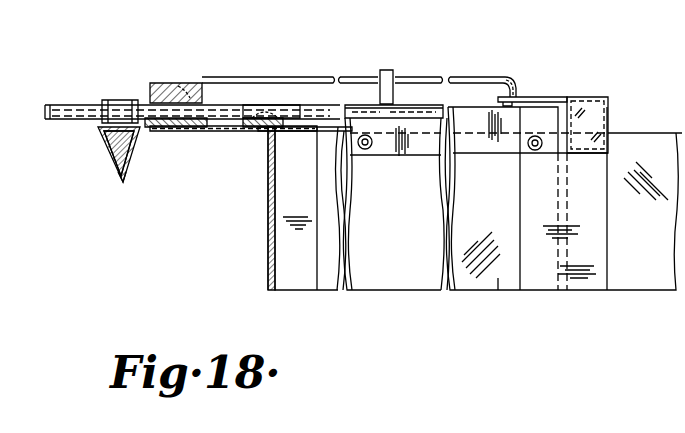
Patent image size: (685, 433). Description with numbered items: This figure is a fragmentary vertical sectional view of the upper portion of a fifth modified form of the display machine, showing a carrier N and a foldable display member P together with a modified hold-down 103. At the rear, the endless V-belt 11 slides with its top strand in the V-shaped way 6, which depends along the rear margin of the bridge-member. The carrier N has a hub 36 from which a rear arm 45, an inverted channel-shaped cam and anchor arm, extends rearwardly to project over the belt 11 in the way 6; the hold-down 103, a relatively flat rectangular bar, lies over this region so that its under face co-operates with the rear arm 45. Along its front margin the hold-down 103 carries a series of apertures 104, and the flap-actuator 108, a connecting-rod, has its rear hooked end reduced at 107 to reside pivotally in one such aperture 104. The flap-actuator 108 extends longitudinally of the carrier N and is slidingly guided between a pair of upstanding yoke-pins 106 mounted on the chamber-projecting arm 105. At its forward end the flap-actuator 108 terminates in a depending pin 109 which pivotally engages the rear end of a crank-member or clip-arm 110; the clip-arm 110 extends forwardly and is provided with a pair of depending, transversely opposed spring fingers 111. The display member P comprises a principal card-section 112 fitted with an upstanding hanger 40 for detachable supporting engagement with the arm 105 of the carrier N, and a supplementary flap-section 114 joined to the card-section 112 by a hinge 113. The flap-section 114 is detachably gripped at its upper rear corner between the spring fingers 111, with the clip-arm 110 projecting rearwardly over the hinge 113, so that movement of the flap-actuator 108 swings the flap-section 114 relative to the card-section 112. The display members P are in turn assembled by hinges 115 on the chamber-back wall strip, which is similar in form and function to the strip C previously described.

The rear arm 45 is at (77, 121).
The endless V-belt 11 is at (127, 145).
The V-shaped way 6 is at (122, 175).
The hold-down 103 is at (148, 83).
The reduced rear hooked end 107 is at (180, 88).
The aperture 104 is at (190, 85).
The flap-actuator 108 is at (305, 61).
The yoke-pins 106 is at (388, 70).
The depending pin 109 is at (513, 88).
The clip-arm 110 is at (543, 98).
The spring fingers 111 is at (603, 126).
The hub-portion 36 is at (287, 108).
The hinges 115 is at (300, 278).
The strip C is at (262, 275).
The hanger 40 is at (421, 148).
The chamber-projecting arm 105 is at (353, 104).
The carrier N is at (410, 102).
The card-section 112 is at (480, 283).
The display member P is at (498, 278).
The hinge 113 is at (545, 278).
The flap-section 114 is at (638, 278).